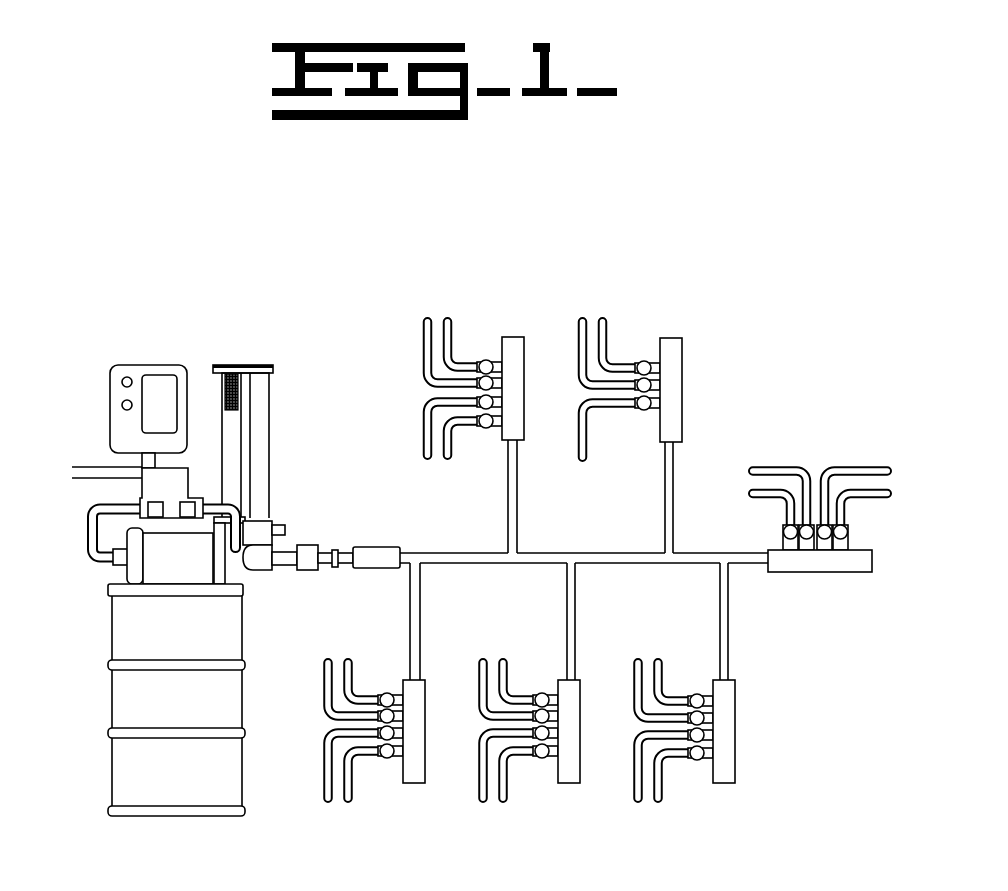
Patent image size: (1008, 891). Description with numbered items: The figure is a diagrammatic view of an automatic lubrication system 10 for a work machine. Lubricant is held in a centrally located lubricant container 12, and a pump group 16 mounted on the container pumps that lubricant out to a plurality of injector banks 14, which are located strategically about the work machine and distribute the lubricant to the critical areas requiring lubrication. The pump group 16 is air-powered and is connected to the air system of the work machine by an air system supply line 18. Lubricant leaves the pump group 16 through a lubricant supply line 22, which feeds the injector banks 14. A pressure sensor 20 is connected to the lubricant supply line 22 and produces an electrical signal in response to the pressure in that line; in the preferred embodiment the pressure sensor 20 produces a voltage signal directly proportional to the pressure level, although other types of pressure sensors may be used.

The automatic lubrication system 10 is at (390, 252).
The lubricant container 12 is at (112, 703).
The injector banks 14 is at (700, 323).
The pump group 16 is at (278, 466).
The air system supply line 18 is at (84, 452).
The pressure sensor 20 is at (218, 544).
The lubricant supply line 22 is at (268, 527).